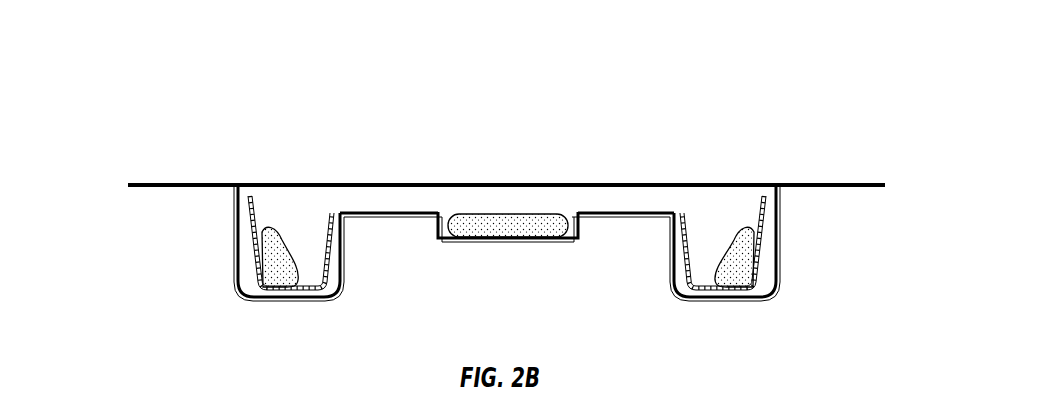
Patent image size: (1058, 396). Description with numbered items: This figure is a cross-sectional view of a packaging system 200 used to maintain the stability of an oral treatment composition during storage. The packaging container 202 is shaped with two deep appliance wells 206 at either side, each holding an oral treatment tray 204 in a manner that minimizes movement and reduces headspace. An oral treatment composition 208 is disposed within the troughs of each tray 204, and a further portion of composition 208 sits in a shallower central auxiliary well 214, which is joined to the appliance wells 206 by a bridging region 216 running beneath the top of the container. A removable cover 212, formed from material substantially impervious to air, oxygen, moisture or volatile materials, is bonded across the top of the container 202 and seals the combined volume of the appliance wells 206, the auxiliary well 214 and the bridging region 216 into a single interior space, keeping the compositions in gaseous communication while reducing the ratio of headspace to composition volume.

The packaging system 200 is at (737, 84).
The packaging container 202 is at (237, 262).
The oral treatment tray 204 is at (247, 213).
The appliance well 206 is at (298, 208).
The oral treatment composition 208 is at (275, 285).
The removable cover 212 is at (440, 183).
The auxiliary well 214 is at (436, 224).
The bridging region 216 is at (600, 198).